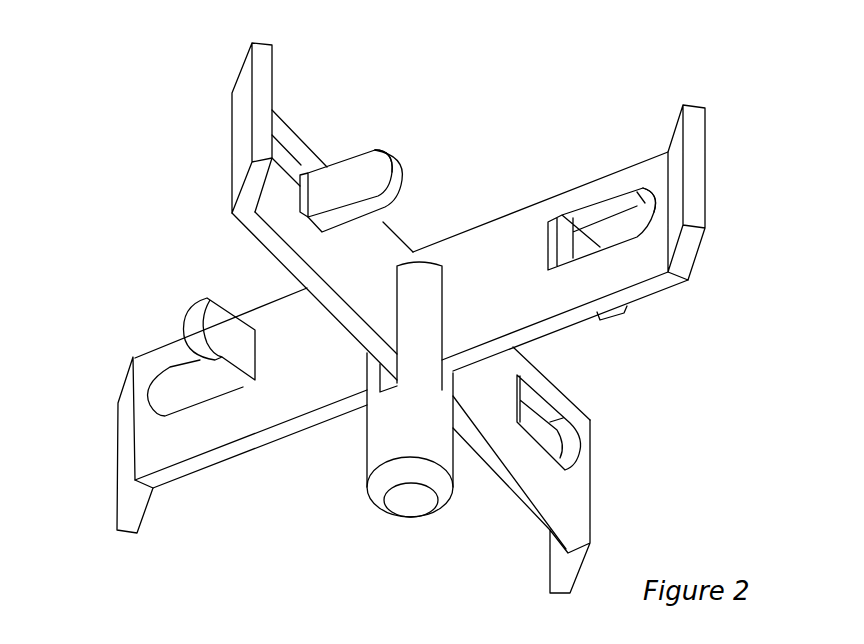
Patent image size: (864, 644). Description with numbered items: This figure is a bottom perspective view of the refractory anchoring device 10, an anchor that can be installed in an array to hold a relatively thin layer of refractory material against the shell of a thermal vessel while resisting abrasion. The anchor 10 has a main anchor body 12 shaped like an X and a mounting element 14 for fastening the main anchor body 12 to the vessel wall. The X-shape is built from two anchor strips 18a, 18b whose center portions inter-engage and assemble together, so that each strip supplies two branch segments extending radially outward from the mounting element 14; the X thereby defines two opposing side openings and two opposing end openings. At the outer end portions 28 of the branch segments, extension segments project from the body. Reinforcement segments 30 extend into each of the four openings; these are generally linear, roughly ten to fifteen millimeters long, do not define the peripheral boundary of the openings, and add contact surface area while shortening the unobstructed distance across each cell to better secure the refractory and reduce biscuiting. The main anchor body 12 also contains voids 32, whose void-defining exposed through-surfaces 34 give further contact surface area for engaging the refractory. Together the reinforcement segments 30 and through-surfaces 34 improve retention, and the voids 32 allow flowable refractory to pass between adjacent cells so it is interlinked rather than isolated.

The refractory anchoring device 10 is at (396, 314).
The main anchor body 12 is at (239, 483).
The mounting element 14 is at (352, 519).
The first anchor strip 18a is at (199, 220).
The second anchor strip 18b is at (116, 357).
The outer end portion 28 is at (409, 157).
The reinforcement segment 30 is at (380, 121).
The void 32 is at (295, 139).
The void-defining exposed through-surface 34 is at (281, 150).